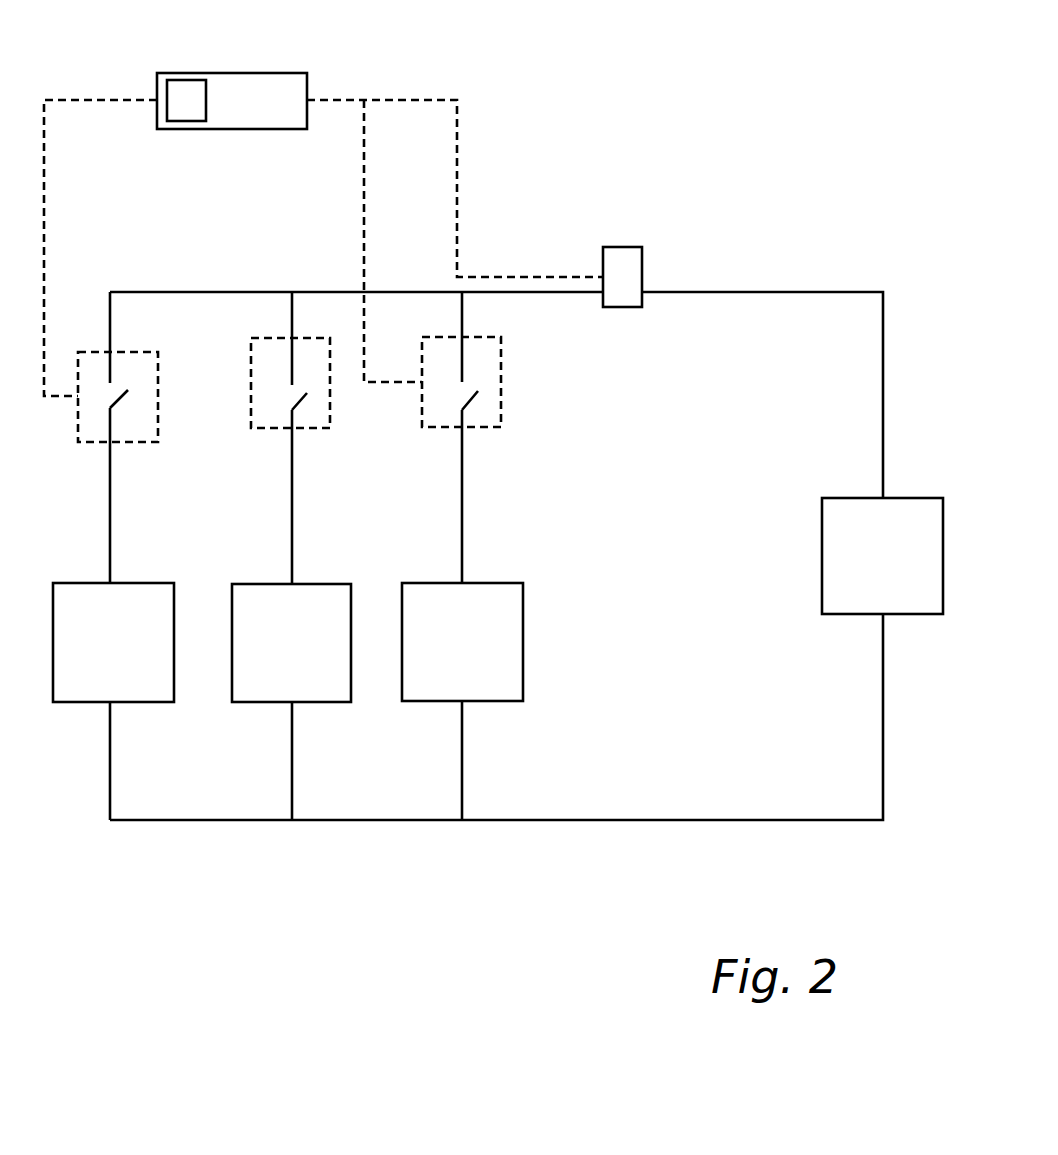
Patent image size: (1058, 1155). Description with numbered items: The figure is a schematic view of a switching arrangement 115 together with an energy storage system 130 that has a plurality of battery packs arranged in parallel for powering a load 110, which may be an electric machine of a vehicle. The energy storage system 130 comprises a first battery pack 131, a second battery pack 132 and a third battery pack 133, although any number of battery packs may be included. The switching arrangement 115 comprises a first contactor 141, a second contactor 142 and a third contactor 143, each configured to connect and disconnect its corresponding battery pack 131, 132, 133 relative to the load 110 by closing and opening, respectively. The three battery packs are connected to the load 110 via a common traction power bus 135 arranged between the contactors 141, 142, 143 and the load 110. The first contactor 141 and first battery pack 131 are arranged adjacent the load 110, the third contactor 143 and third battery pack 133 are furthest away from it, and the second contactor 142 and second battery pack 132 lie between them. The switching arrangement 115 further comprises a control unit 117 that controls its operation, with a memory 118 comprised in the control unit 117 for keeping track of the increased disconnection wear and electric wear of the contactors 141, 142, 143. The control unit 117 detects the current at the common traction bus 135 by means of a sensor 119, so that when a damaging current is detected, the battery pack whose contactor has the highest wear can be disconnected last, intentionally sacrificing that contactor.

The load 110 is at (935, 498).
The switching arrangement 115 is at (516, 85).
The control unit 117 is at (281, 73).
The memory 118 is at (185, 80).
The sensor 119 is at (631, 247).
The energy storage system 130 is at (240, 853).
The first battery pack 131 is at (515, 583).
The second battery pack 132 is at (338, 703).
The third battery pack 133 is at (165, 583).
The common traction power bus 135 is at (762, 292).
The first contactor 141 is at (520, 370).
The second contactor 142 is at (307, 437).
The third contactor 143 is at (145, 343).